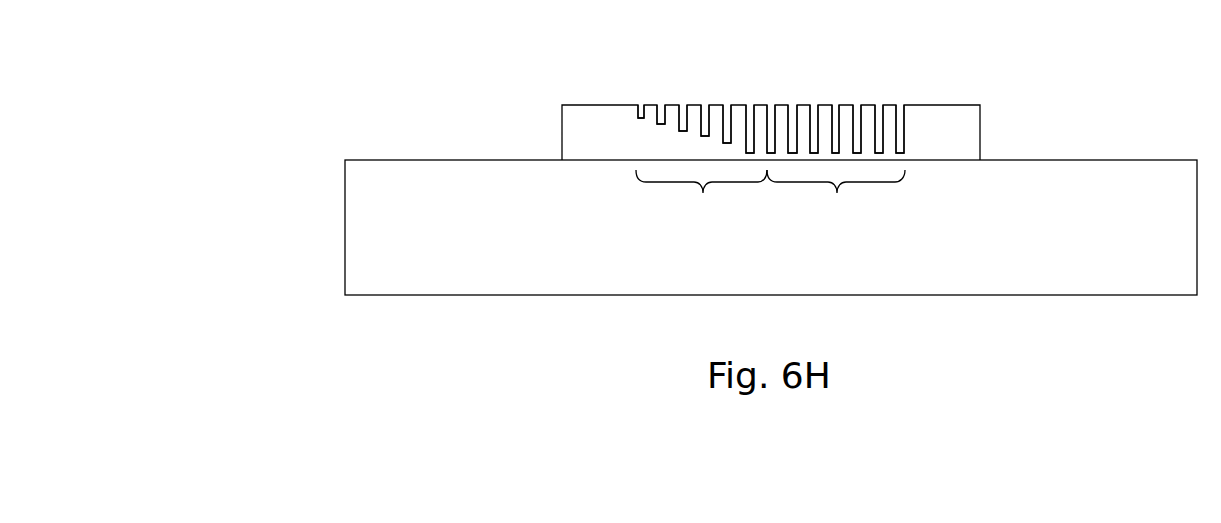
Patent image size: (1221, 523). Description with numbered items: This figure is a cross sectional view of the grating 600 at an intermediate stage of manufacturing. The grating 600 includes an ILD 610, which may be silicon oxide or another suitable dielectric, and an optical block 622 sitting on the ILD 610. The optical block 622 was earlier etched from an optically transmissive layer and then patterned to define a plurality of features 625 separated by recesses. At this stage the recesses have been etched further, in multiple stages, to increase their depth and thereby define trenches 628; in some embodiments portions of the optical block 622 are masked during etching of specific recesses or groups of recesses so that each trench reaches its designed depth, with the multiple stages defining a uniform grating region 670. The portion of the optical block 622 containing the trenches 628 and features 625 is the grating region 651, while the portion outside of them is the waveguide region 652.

The grating 600 is at (189, 82).
The ILD 610 is at (363, 230).
The optical block 622 is at (575, 130).
The features 625 is at (672, 106).
The trenches 628 is at (748, 106).
The grating region 651 is at (806, 82).
The waveguide region 652 is at (950, 80).
The uniform grating region 670 is at (770, 200).